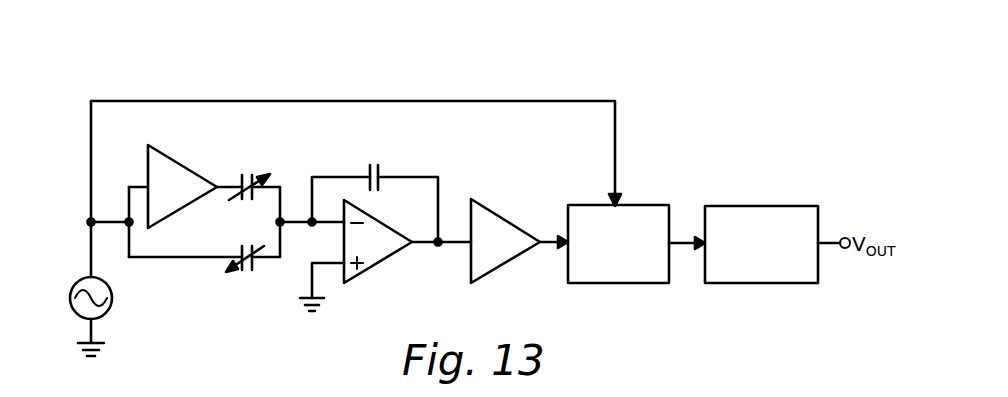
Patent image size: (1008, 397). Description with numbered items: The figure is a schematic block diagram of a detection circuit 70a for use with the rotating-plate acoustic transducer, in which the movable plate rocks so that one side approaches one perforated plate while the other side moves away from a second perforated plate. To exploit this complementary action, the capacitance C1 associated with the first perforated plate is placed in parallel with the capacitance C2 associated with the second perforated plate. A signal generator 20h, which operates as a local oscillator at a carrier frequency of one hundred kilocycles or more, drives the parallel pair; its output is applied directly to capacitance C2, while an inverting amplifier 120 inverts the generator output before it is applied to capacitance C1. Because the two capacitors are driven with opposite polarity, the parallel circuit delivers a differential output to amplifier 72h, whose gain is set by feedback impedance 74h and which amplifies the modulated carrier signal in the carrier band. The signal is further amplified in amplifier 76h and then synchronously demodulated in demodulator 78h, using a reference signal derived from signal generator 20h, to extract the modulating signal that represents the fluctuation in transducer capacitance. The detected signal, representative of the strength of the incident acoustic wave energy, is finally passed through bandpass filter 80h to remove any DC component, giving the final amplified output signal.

The detection circuit 70a is at (456, 83).
The inverting amplifier 120 is at (177, 158).
The capacitance C1 is at (245, 176).
The capacitance C2 is at (242, 247).
The signal generator 20h is at (113, 302).
The amplifier 72h is at (381, 222).
The feedback impedance 74h is at (375, 163).
The amplifier 76h is at (497, 215).
The demodulator 78h is at (643, 205).
The bandpass filter 80h is at (748, 206).